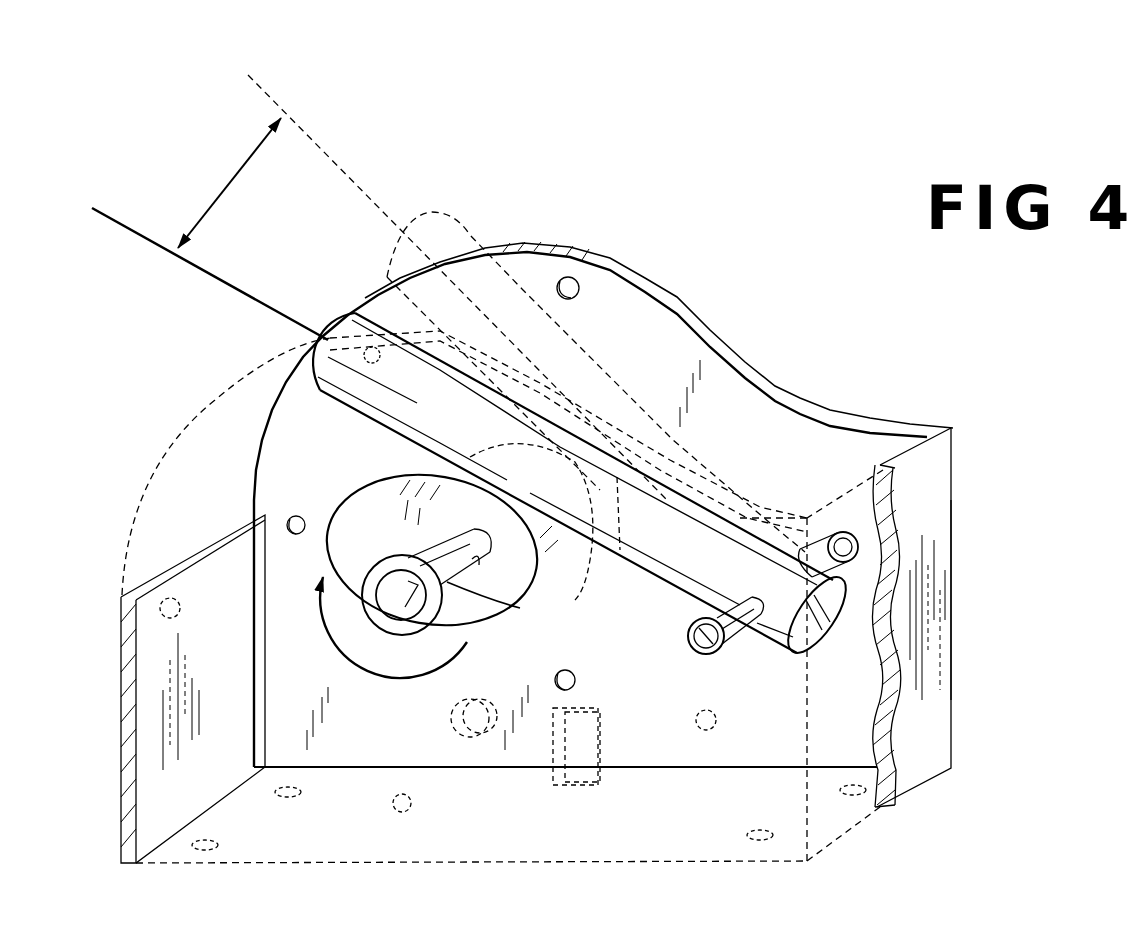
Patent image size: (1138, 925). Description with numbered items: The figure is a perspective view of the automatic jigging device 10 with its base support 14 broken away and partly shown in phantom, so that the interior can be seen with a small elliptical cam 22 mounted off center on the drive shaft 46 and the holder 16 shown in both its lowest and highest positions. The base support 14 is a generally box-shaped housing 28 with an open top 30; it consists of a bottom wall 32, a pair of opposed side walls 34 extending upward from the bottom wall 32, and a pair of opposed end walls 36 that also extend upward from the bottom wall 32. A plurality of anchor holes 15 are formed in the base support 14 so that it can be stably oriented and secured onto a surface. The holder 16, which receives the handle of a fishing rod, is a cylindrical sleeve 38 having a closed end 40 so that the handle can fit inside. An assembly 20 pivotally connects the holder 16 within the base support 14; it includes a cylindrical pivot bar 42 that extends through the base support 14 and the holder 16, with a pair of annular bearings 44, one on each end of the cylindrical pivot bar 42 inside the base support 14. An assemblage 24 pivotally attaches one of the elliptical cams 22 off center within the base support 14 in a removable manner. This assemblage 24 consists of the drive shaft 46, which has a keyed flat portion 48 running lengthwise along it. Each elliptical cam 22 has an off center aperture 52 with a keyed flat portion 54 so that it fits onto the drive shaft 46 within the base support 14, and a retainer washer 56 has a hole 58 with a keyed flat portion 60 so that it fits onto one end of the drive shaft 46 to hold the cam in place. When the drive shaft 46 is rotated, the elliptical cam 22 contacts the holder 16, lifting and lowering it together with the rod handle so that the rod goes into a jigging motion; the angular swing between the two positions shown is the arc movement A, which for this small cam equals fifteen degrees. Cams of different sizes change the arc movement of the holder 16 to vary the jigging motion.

The arc movement A is at (238, 178).
The automatic jigging device 10 is at (716, 262).
The base support 14 is at (954, 476).
The anchor holes 15 is at (575, 292).
The holder 16 is at (530, 287).
The pivotally connecting assembly 20 is at (698, 660).
The elliptical cam 22 is at (572, 590).
The pivotally attaching assemblage 24 is at (465, 625).
The generally box-shaped housing 28 is at (954, 556).
The open top 30 is at (744, 326).
The bottom wall 32 is at (733, 862).
The side walls 34 is at (797, 417).
The end walls 36 is at (194, 568).
The cylindrical sleeve 38 is at (598, 345).
The closed end 40 is at (822, 637).
The cylindrical pivot bar 42 is at (738, 615).
The annular bearings 44 is at (843, 533).
The drive shaft 46 is at (438, 562).
The keyed flat portion 48 is at (455, 600).
The off center aperture 52 is at (474, 533).
The keyed flat portion 54 is at (480, 563).
The retainer washer 56 is at (376, 578).
The hole 58 is at (378, 596).
The keyed flat portion 60 is at (416, 588).